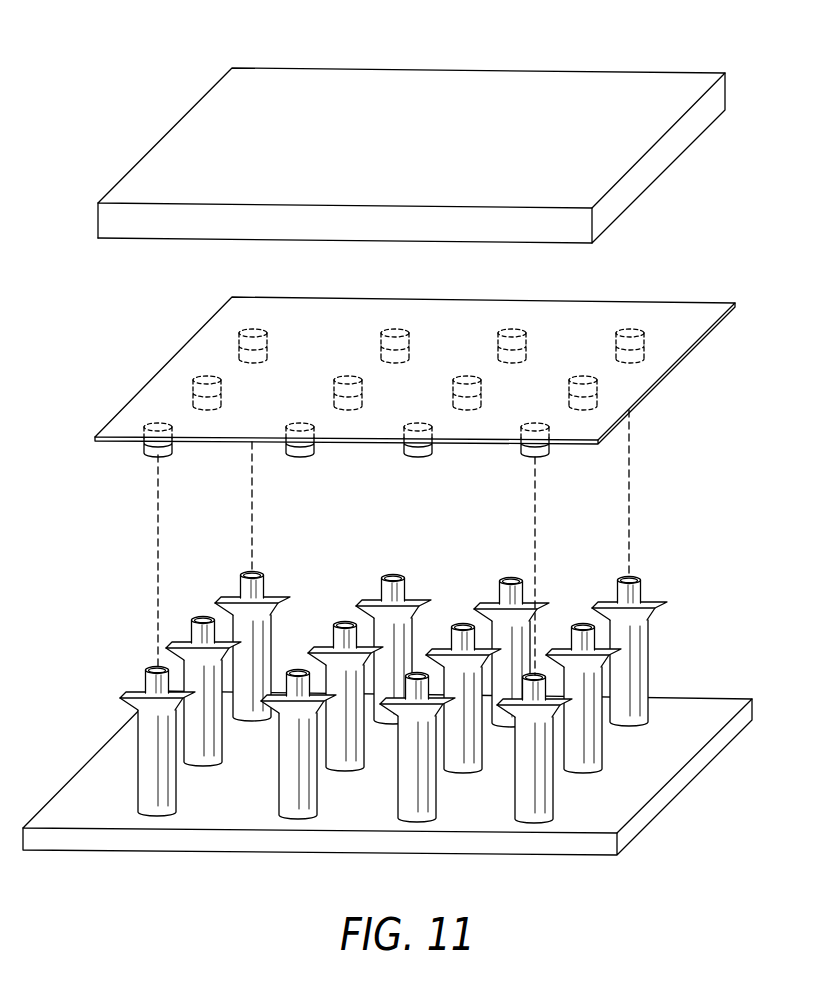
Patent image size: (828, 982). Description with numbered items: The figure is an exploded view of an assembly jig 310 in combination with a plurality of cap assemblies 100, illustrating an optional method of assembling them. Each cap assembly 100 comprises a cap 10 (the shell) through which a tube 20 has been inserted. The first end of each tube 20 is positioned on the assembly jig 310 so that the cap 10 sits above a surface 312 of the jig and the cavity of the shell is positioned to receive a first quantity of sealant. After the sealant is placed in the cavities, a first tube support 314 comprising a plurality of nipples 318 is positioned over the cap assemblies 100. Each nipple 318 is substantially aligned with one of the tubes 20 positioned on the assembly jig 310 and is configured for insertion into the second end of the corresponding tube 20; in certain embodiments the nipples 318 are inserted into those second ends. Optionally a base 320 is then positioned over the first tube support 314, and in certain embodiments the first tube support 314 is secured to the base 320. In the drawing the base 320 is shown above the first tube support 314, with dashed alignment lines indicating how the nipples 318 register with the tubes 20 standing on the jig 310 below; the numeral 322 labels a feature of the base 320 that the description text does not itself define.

The base 320 is at (392, 161).
The bottom surface of top plate 322 is at (143, 242).
The first tube support 314 is at (419, 373).
The nipples 318 is at (418, 453).
The assembly jig 310 is at (414, 751).
The surface 312 is at (652, 765).
The cap assembly 100 is at (431, 670).
The cap 10 is at (279, 597).
The tube 20 is at (233, 588).